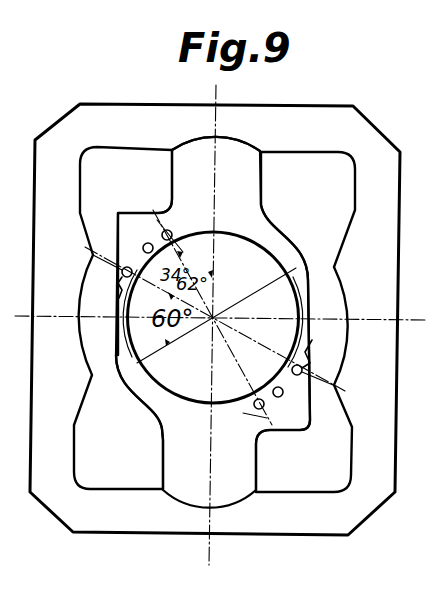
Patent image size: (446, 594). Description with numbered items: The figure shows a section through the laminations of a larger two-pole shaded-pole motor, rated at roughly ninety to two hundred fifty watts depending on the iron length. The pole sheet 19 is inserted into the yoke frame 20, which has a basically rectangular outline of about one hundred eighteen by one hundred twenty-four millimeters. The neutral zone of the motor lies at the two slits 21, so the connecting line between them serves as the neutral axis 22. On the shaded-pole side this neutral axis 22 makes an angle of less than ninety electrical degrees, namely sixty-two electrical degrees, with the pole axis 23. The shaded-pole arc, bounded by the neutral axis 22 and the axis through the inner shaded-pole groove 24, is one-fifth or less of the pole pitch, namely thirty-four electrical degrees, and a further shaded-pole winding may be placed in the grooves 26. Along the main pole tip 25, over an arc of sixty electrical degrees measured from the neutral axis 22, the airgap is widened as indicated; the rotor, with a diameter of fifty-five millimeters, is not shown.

The pole sheet 19 is at (250, 184).
The yoke frame 20 is at (382, 260).
The slits 21 is at (122, 276).
The neutral axis 22 is at (82, 248).
The pole axis 23 is at (214, 153).
The inner shaded-pole groove 24 is at (170, 232).
The main pole tip 25 is at (310, 240).
The grooves 26 is at (145, 243).